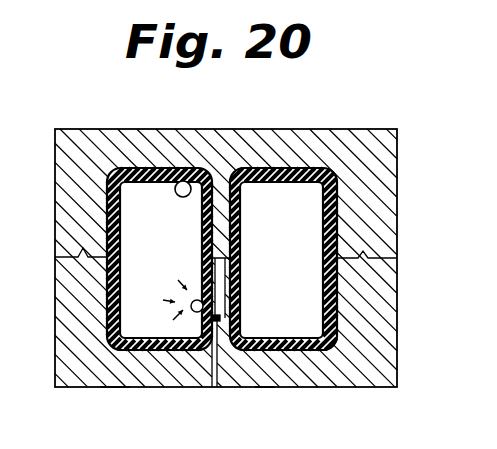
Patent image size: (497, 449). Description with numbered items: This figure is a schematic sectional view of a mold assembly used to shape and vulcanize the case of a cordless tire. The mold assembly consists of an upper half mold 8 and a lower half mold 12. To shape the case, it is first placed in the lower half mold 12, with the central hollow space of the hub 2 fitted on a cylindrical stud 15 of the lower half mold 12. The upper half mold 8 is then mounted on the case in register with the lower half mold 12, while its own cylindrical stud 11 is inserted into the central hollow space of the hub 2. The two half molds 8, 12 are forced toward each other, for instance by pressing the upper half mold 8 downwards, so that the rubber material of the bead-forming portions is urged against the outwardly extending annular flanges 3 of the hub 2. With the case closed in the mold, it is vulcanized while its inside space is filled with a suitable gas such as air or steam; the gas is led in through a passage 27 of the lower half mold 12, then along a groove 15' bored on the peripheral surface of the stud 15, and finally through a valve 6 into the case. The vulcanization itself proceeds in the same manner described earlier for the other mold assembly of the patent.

The upper half mold 8 is at (143, 137).
The hub 2 is at (200, 228).
The outwardly extending annular flanges 3 is at (184, 181).
The cylindrical stud 11 is at (218, 232).
The valve 6 is at (197, 306).
The cylindrical stud 15 is at (321, 289).
The passage 27 is at (216, 388).
The lower half mold 12 is at (116, 378).
The groove 15' is at (257, 407).